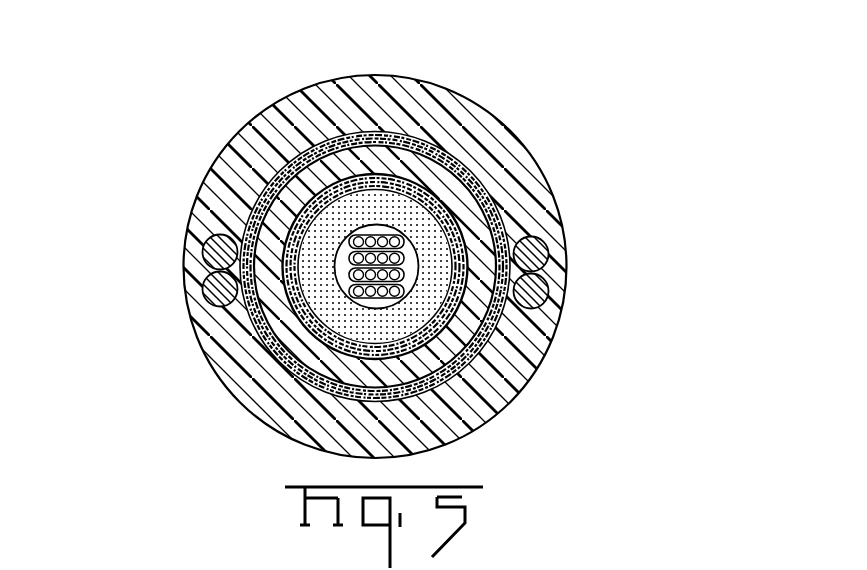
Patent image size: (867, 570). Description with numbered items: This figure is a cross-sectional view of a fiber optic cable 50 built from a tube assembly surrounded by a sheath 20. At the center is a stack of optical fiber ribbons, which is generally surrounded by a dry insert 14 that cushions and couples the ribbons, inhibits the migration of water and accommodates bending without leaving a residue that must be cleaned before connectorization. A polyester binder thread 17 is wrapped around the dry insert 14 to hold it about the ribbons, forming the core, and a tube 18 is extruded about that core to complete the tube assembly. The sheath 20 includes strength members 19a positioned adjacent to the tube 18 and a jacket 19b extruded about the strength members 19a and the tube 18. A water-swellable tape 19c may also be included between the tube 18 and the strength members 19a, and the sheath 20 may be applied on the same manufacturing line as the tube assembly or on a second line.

The cable 50 is at (232, 100).
The sheath 20 is at (245, 148).
The polyester binder thread 17 is at (373, 132).
The tube 18 is at (437, 175).
The dry insert 14 is at (457, 227).
The strength members 19a is at (218, 243).
The jacket 19b is at (227, 355).
The water-swellable tape 19c is at (497, 333).